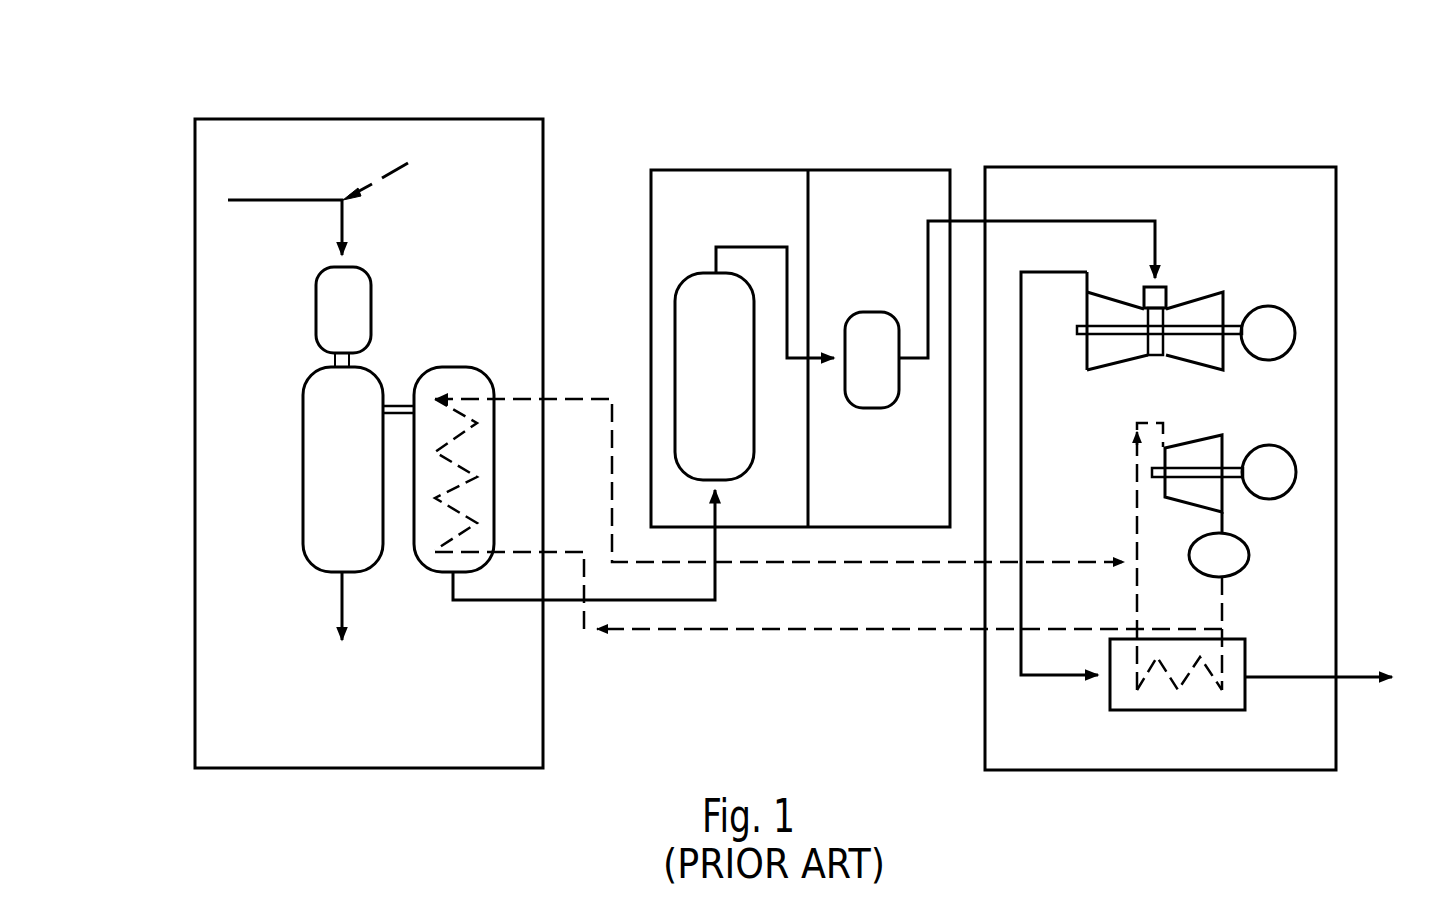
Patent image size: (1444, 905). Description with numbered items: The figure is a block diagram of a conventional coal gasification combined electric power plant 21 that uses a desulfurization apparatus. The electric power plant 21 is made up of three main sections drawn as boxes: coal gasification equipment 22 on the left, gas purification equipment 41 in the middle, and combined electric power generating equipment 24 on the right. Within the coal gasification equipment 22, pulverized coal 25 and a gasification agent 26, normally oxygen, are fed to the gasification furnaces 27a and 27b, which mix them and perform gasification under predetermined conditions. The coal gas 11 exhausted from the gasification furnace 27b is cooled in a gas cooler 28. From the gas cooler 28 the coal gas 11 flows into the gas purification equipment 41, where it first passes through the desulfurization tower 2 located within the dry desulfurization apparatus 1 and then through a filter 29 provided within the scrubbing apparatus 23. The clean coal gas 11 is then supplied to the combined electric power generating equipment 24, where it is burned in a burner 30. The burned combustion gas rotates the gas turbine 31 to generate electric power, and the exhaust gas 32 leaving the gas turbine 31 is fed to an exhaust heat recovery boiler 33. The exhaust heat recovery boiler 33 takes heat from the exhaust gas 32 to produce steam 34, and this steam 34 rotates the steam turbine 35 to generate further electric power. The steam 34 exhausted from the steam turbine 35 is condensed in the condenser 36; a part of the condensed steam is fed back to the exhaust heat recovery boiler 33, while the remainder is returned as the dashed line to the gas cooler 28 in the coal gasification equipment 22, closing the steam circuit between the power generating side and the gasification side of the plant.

The dry desulfurization apparatus 1 is at (723, 172).
The desulfurization tower 2 is at (698, 290).
The coal gas 11 is at (397, 400).
The electric power plant 21 is at (612, 100).
The coal gasification equipment 22 is at (378, 128).
The scrubbing apparatus 23 is at (848, 178).
The combined electric power generating equipment 24 is at (1152, 183).
The pulverized coal 25 is at (262, 200).
The gasification agent 26 is at (408, 163).
The gasification furnace 27a is at (326, 313).
The gasification furnace 27b is at (320, 560).
The gas cooler 28 is at (460, 378).
The filter 29 is at (867, 330).
The burner 30 is at (1163, 298).
The gas turbine 31 is at (1105, 350).
The exhaust gas 32 is at (1021, 465).
The exhaust heat recovery boiler 33 is at (1160, 690).
The steam 34 is at (1137, 520).
The steam turbine 35 is at (1207, 450).
The condenser 36 is at (1235, 557).
The gas purification equipment 41 is at (940, 125).